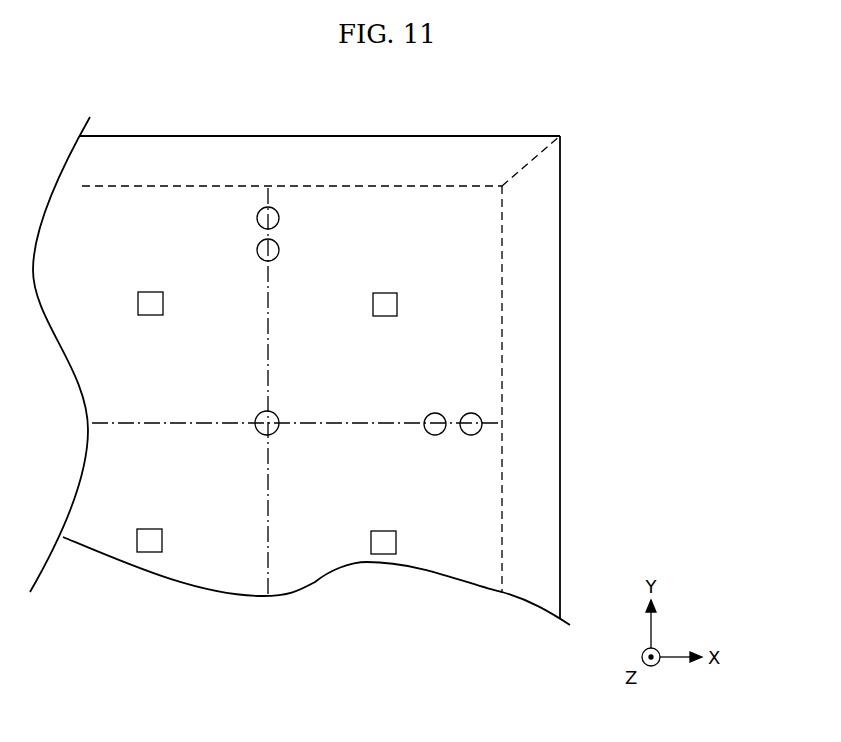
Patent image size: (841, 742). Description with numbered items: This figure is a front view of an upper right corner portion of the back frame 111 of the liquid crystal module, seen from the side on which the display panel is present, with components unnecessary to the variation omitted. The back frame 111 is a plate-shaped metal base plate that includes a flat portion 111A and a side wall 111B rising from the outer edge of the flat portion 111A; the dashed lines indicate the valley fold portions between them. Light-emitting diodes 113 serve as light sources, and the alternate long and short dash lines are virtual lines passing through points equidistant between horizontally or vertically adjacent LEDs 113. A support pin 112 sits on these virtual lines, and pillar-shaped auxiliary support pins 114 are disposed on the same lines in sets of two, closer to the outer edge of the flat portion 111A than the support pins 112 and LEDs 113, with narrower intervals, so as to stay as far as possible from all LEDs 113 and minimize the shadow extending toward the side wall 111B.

The back frame 111 is at (640, 268).
The flat portion 111A is at (483, 357).
The side wall 111B is at (533, 240).
The support pin 112 is at (258, 413).
The light-emitting diode 113 is at (138, 293).
The auxiliary support pin 114 is at (258, 224).